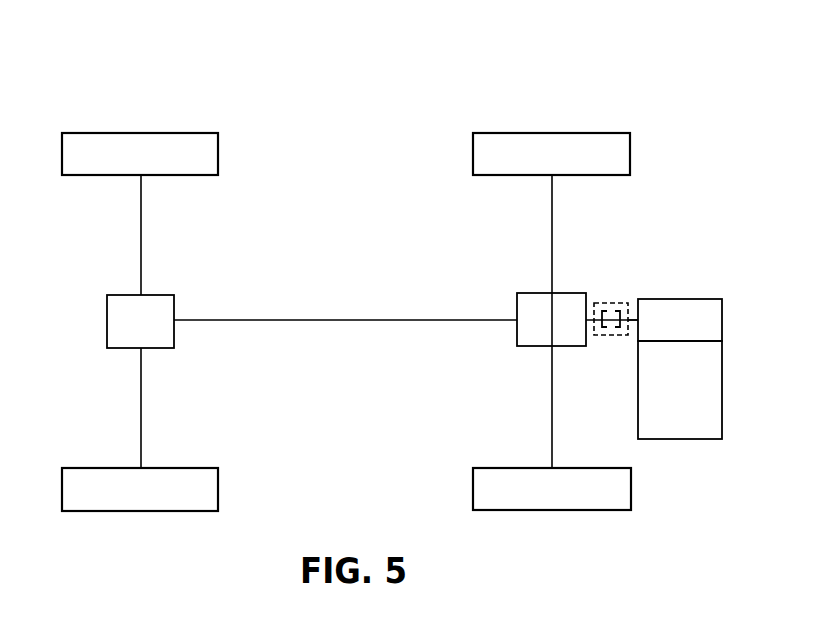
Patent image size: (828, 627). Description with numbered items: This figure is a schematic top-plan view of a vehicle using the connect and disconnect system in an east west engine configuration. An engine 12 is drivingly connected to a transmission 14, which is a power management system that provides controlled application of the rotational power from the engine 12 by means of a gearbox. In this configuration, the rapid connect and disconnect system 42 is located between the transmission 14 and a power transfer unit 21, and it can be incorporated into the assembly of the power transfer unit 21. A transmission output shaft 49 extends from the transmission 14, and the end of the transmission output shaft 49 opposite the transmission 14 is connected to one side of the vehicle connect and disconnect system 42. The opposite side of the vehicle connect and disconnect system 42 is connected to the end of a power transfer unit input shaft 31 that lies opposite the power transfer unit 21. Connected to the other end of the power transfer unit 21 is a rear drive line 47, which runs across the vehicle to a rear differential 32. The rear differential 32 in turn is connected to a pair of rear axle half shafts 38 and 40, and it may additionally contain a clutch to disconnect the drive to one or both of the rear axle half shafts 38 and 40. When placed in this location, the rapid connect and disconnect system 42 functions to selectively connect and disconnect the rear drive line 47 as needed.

The engine 12 is at (680, 390).
The transmission 14 is at (680, 320).
The power transfer unit 21 is at (519, 348).
The power transfer unit input shaft 31 is at (590, 317).
The rear differential 32 is at (140, 321).
The rear axle half shaft 38 is at (141, 408).
The rear axle half shaft 40 is at (141, 236).
The vehicle connect and disconnect system 42 is at (620, 303).
The rear drive line 47 is at (338, 326).
The transmission output shaft 49 is at (634, 322).